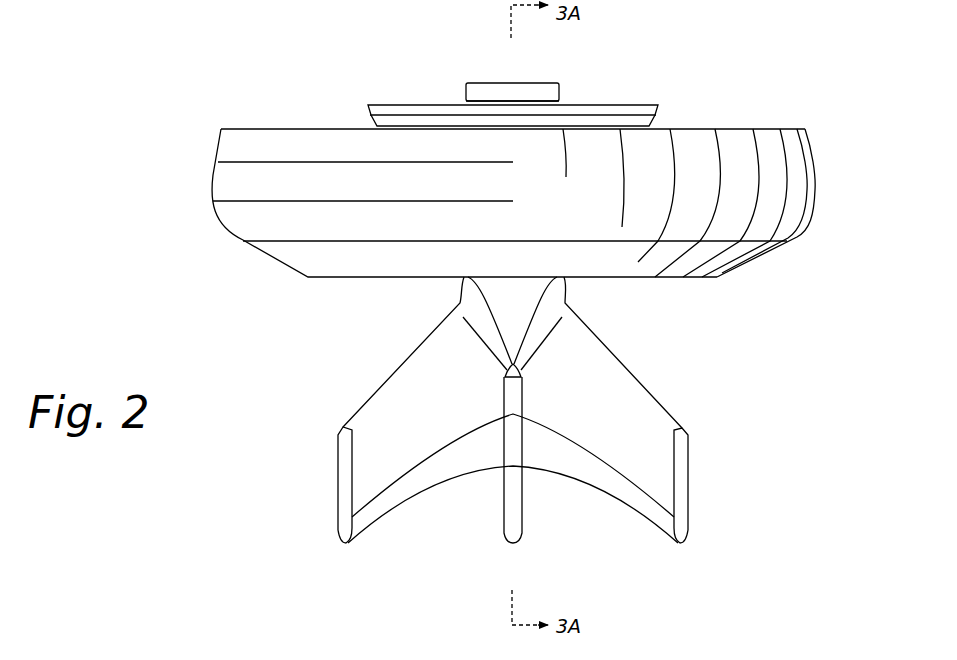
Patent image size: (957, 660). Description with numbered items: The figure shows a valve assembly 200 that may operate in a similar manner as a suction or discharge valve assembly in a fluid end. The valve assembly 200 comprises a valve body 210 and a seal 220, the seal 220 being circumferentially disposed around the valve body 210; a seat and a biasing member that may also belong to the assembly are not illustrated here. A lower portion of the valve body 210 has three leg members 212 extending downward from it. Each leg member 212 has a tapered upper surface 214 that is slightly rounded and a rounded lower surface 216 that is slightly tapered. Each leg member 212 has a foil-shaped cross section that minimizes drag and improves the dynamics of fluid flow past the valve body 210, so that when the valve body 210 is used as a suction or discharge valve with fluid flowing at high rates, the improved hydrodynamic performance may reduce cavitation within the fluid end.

The valve assembly 200 is at (150, 52).
The valve body 210 is at (632, 104).
The seal 220 is at (808, 145).
The leg member 212 is at (346, 497).
The tapered upper surface 214 is at (402, 367).
The rounded lower surface 216 is at (423, 488).